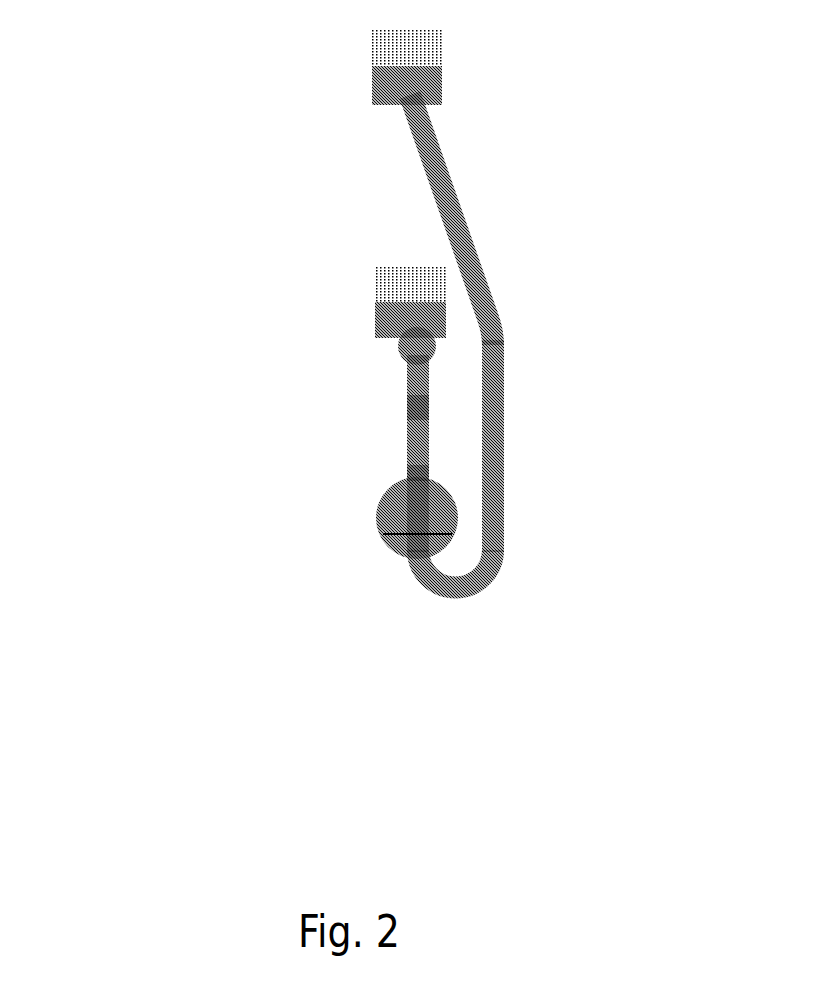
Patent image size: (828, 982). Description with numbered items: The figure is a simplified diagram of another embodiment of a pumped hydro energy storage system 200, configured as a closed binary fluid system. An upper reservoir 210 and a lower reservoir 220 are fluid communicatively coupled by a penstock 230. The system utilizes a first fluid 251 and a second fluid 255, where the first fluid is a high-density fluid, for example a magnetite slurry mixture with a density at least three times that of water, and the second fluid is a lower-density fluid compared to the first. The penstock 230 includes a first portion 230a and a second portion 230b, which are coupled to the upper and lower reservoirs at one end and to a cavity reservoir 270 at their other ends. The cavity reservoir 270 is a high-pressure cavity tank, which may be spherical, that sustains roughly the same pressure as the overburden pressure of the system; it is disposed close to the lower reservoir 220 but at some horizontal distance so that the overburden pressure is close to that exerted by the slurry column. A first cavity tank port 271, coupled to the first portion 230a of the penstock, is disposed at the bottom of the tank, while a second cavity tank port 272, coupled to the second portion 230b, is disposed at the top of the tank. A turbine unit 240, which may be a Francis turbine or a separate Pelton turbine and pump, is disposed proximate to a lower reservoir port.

The pumped hydro energy storage system 200 is at (372, 437).
The upper reservoir 210 is at (478, 58).
The lower reservoir 220 is at (370, 302).
The penstock 230 is at (372, 345).
The first portion of the penstock 230a is at (454, 190).
The second portion of the penstock 230b is at (400, 430).
The turbine unit 240 is at (398, 346).
The first fluid 251 is at (500, 378).
The second fluid 255 is at (420, 406).
The cavity reservoir 270 is at (376, 534).
The first cavity tank port 271 is at (403, 556).
The second cavity tank port 272 is at (398, 472).